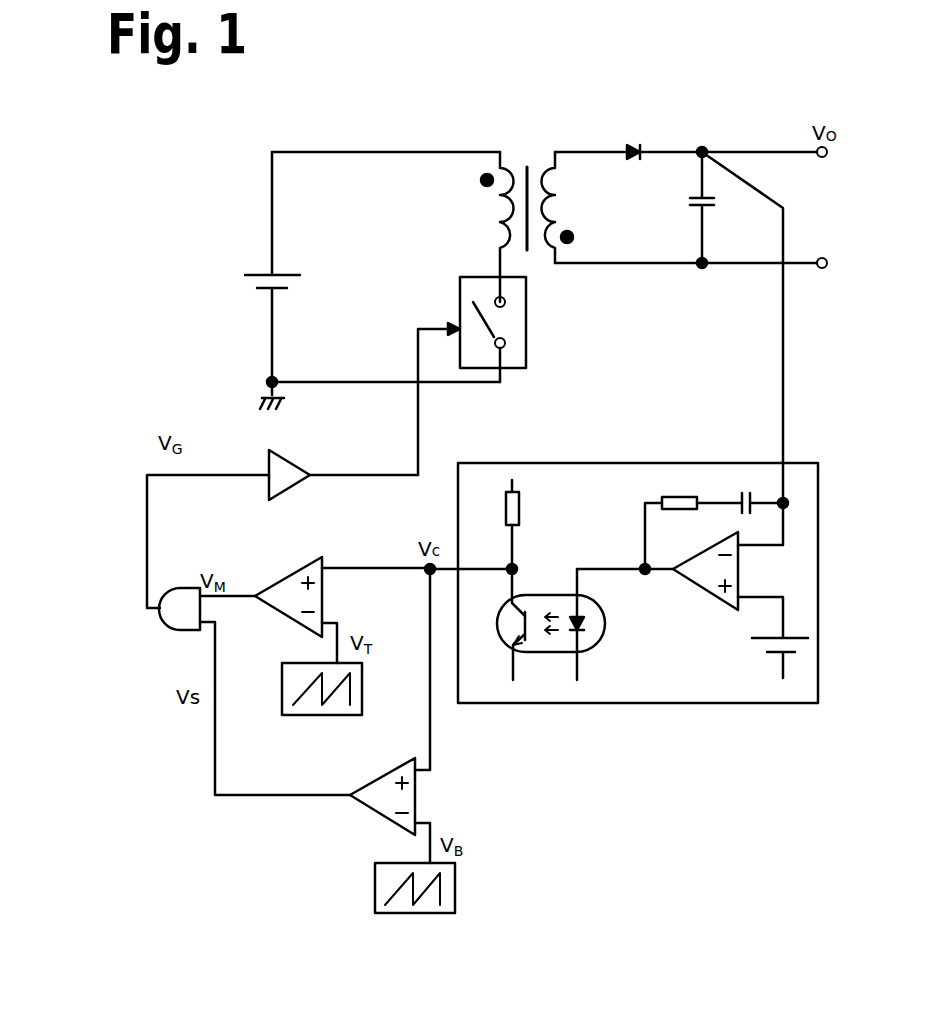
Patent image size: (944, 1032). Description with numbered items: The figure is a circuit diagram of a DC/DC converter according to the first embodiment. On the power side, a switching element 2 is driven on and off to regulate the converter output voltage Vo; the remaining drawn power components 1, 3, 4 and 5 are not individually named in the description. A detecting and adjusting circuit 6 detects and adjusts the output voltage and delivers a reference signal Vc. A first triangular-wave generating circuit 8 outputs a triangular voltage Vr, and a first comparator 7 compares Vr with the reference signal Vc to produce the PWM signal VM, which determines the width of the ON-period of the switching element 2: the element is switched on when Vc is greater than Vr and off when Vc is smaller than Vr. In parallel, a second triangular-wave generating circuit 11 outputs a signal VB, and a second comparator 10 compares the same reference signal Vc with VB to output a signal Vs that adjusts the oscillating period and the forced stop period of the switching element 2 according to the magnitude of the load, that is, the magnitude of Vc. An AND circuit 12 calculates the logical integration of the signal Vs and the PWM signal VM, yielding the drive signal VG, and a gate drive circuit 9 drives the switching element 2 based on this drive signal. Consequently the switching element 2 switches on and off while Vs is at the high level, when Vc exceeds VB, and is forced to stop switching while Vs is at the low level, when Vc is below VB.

The DC power source (battery) 1 is at (236, 290).
The switching element 2 is at (540, 355).
The transformer 3 is at (516, 138).
The rectifying diode 4 is at (634, 140).
The smoothing capacitor 5 is at (727, 208).
The detecting and adjusting circuit 6 is at (643, 715).
The first comparator 7 is at (283, 569).
The first triangular-wave generating circuit 8 is at (300, 717).
The gate drive circuit 9 is at (309, 488).
The second comparator 10 is at (362, 824).
The second triangular-wave generating circuit 11 is at (428, 928).
The AND circuit 12 is at (160, 638).